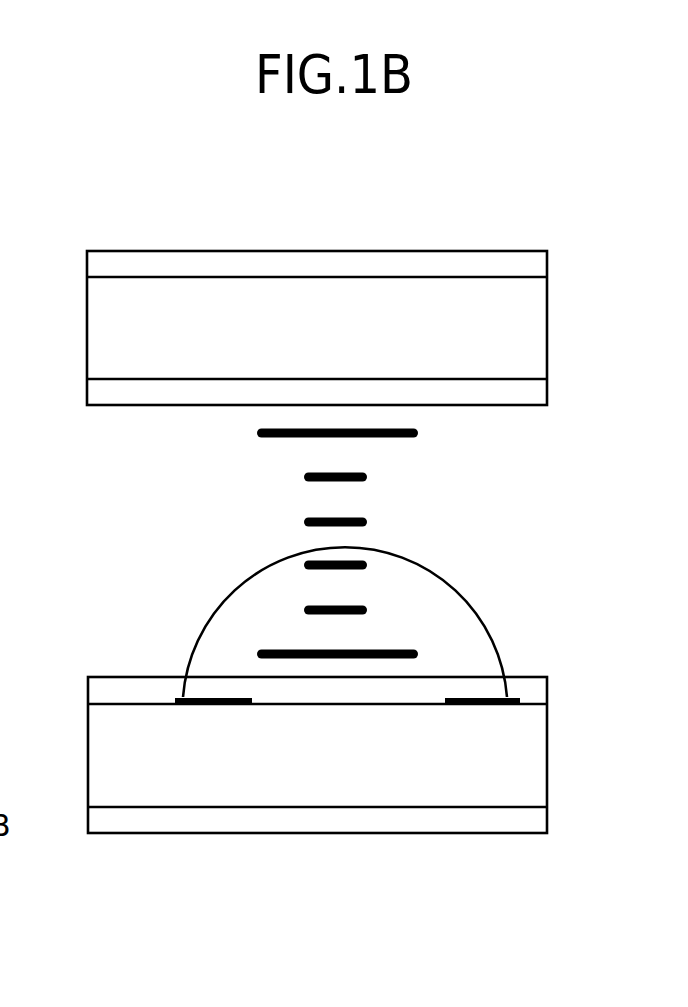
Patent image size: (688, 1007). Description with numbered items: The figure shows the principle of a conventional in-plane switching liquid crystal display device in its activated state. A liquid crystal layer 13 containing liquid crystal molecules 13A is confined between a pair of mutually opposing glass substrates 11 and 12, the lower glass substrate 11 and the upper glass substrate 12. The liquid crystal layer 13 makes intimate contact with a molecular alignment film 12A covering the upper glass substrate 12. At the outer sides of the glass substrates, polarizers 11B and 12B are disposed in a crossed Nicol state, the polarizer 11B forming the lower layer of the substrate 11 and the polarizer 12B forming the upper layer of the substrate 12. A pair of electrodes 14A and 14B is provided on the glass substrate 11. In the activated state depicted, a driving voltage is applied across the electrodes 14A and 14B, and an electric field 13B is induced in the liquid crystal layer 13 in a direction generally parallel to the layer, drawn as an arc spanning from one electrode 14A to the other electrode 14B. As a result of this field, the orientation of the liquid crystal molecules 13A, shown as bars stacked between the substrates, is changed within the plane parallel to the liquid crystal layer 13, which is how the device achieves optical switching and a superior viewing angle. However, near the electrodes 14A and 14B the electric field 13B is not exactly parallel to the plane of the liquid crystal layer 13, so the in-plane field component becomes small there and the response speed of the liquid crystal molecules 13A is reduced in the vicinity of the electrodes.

The glass substrate 11 is at (368, 762).
The polarizer 11B is at (535, 822).
The glass substrate 12 is at (321, 324).
The molecular alignment film 12A is at (95, 393).
The polarizer 12B is at (455, 264).
The liquid crystal layer 13 is at (384, 556).
The liquid crystal molecules 13A is at (368, 519).
The electric field 13B is at (224, 606).
The electrode 14A is at (183, 697).
The electrode 14B is at (507, 697).